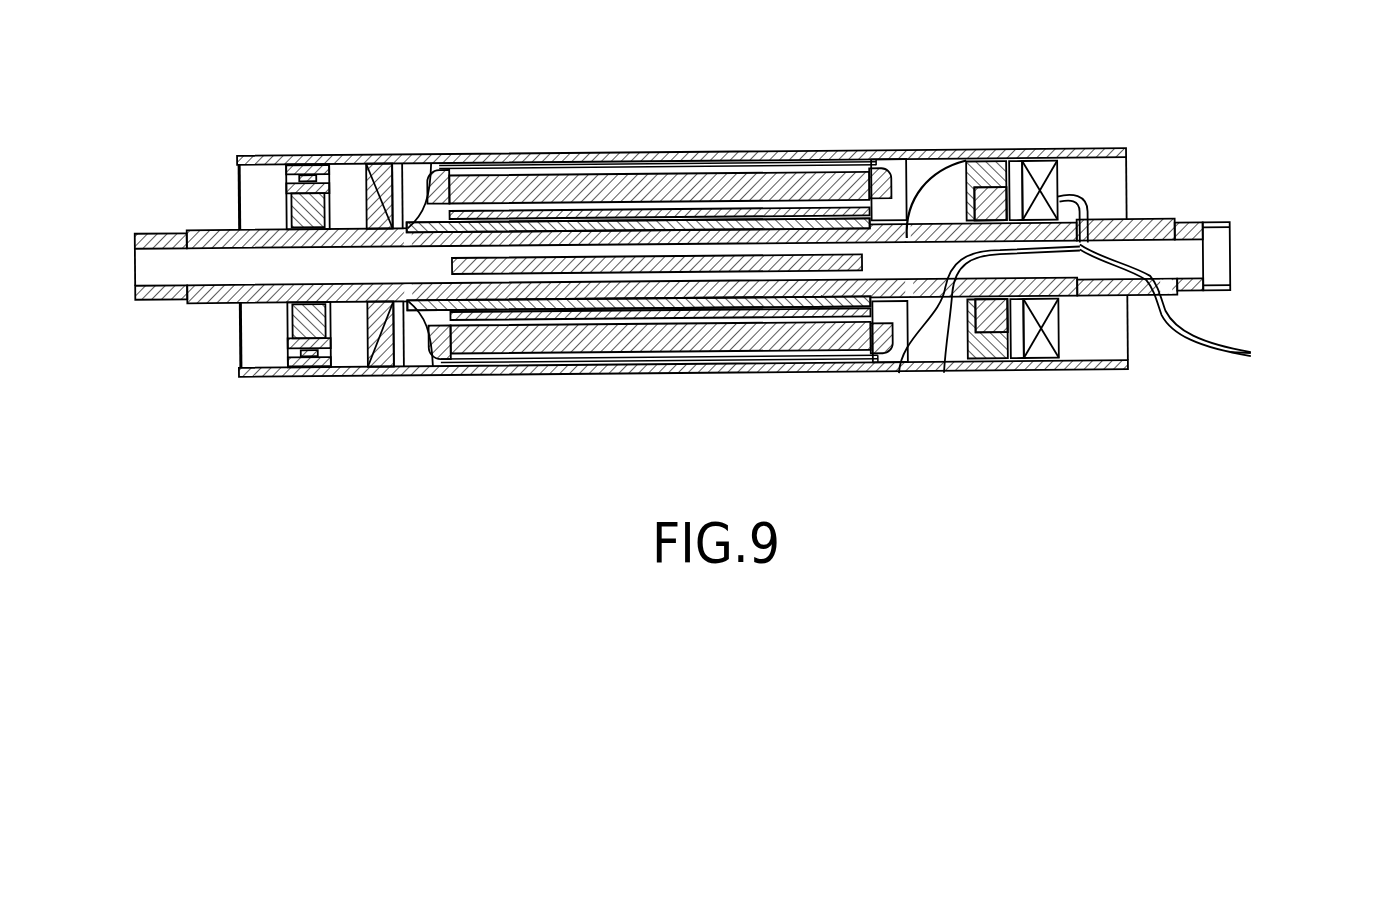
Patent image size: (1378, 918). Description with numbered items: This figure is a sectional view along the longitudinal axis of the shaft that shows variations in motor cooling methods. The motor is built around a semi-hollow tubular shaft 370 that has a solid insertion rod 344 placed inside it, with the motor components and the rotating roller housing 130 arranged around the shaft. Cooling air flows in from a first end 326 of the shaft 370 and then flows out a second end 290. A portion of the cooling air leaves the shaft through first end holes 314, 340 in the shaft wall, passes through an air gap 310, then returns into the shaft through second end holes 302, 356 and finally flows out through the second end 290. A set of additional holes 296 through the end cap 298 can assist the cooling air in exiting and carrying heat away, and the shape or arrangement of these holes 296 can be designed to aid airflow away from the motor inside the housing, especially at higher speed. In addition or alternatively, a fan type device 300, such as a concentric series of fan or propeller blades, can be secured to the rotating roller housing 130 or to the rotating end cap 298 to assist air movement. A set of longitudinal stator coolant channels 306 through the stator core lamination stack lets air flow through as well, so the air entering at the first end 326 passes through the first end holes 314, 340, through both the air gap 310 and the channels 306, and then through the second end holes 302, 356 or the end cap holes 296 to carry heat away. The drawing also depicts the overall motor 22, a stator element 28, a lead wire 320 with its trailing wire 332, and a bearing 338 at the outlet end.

The motor housing 22 is at (843, 150).
The stator end caps and sleeves 28 is at (733, 183).
The rotating roller housing 130 is at (268, 378).
The second end of the shaft 290 is at (153, 260).
The additional holes 296 is at (302, 176).
The end cap 298 is at (320, 174).
The fan type device 300 is at (382, 153).
The second end hole 302 is at (437, 153).
The stator coolant channels 306 is at (664, 195).
The air gap 310 is at (787, 150).
The first end hole 314 is at (967, 162).
The lead wire loop 320 is at (1060, 202).
The first end of the shaft 326 is at (1210, 260).
The lead wire 332 is at (1230, 353).
The bearing 338 is at (943, 373).
The first end hole 340 is at (898, 375).
The solid insertion rod 344 is at (768, 262).
The second end hole 356 is at (408, 378).
The semi-hollow tubular shaft 370 is at (212, 308).